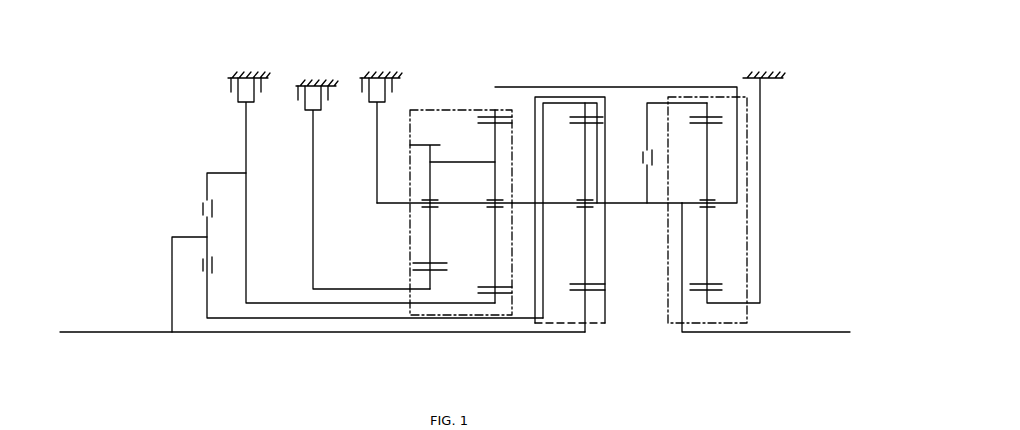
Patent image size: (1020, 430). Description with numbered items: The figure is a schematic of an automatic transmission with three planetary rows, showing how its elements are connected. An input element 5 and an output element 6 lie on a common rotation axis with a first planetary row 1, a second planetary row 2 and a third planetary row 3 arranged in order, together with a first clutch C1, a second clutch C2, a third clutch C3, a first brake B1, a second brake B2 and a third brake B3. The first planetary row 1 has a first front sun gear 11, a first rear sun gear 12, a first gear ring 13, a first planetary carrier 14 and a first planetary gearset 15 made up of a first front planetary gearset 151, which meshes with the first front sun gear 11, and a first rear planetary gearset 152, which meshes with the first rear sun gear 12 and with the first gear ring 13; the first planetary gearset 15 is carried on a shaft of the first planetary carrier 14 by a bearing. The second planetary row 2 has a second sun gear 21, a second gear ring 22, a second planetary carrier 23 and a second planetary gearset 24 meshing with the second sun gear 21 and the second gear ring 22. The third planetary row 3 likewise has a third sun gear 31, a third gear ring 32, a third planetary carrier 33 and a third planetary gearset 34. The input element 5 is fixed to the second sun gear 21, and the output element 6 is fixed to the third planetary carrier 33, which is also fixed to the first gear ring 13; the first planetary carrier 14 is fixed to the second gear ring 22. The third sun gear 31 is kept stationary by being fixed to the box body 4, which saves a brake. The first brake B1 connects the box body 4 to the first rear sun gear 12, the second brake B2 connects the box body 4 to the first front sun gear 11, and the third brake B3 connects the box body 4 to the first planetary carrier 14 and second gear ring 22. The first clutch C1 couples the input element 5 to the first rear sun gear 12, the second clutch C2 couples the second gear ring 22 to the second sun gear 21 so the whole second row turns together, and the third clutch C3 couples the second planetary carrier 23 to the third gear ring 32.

The first planetary row 1 is at (410, 315).
The first front sun gear 11 is at (437, 273).
The first rear sun gear 12 is at (497, 300).
The first gear ring 13 is at (495, 109).
The first planetary carrier 14 is at (403, 204).
The first planetary gearset 15 is at (463, 165).
The first front planetary gearset 151 is at (428, 178).
The first rear planetary gearset 152 is at (495, 182).
The second planetary row 2 is at (606, 325).
The second sun gear 21 is at (600, 307).
The second gear ring 22 is at (587, 108).
The second planetary carrier 23 is at (632, 206).
The second planetary gearset 24 is at (597, 150).
The third planetary row 3 is at (748, 325).
The third sun gear 31 is at (707, 300).
The third gear ring 32 is at (707, 110).
The third planetary carrier 33 is at (737, 173).
The third planetary gearset 34 is at (707, 247).
The box body 4 is at (252, 75).
The input element 5 is at (128, 332).
The output element 6 is at (820, 332).
The first brake B1 is at (240, 94).
The second brake B2 is at (308, 102).
The third brake B3 is at (372, 94).
The first clutch C1 is at (203, 208).
The second clutch C2 is at (203, 265).
The third clutch C3 is at (652, 161).